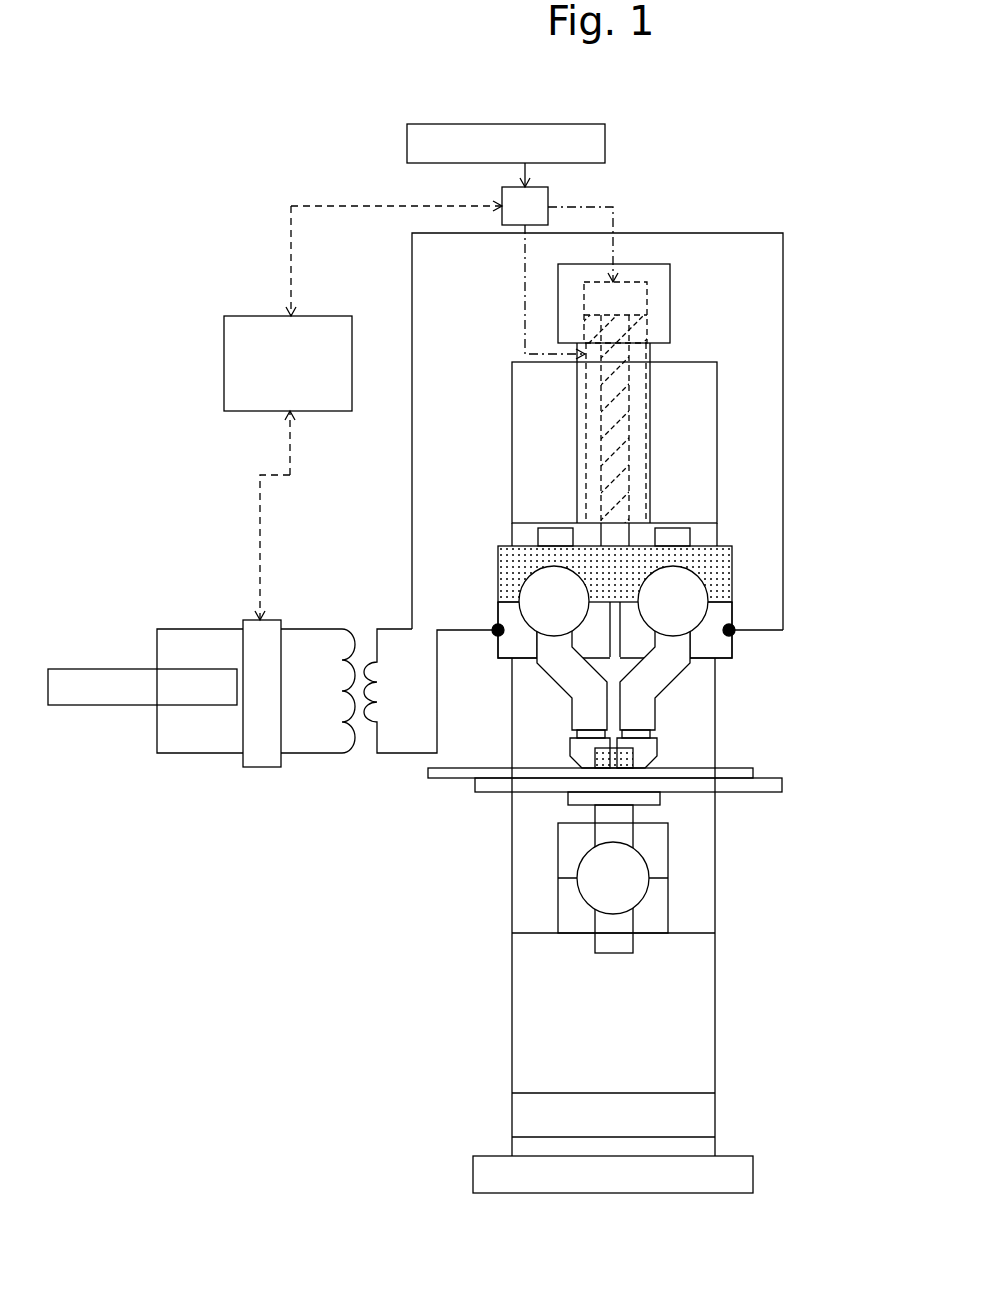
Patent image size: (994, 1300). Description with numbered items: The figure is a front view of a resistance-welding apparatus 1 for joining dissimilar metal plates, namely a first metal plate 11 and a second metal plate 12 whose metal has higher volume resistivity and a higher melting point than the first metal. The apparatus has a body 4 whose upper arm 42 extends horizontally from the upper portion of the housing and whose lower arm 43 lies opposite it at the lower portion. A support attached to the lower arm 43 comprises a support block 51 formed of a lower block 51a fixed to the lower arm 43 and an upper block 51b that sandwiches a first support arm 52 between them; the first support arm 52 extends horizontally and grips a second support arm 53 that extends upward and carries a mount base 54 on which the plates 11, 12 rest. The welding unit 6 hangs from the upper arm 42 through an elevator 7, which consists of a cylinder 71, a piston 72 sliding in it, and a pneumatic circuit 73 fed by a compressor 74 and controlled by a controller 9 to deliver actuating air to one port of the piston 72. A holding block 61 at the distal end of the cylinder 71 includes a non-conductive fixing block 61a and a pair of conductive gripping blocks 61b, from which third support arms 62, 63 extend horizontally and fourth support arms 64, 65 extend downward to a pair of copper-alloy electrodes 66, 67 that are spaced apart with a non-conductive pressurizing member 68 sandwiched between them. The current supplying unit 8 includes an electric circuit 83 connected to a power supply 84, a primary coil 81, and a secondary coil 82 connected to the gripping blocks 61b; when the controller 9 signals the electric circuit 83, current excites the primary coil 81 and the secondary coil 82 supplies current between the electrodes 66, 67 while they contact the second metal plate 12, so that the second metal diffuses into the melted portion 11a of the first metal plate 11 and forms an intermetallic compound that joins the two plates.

The resistance-welding apparatus 1 is at (759, 136).
The body 4 is at (589, 768).
The welding unit 6 is at (671, 623).
The elevator 7 is at (656, 288).
The current supplying unit 8 is at (415, 682).
The controller 9 is at (234, 377).
The first metal plate 11 is at (654, 808).
The melted portion 11a is at (663, 780).
The second metal plate 12 is at (747, 775).
The upper arm 42 is at (552, 430).
The lower arm 43 is at (533, 878).
The support block 51 is at (701, 878).
The lower block 51a is at (728, 904).
The upper block 51b is at (664, 840).
The first support arm 52 is at (603, 883).
The second support arm 53 is at (608, 927).
The mount base 54 is at (568, 797).
The holding block 61 is at (651, 566).
The fixing block 61a is at (720, 557).
The gripping block 61b is at (530, 637).
The third support arm 62 is at (542, 590).
The third support arm 63 is at (700, 597).
The fourth support arm 64 is at (585, 700).
The fourth support arm 65 is at (665, 685).
The electrode 66 is at (578, 758).
The electrode 67 is at (645, 763).
The pressurizing member 68 is at (657, 732).
The cylinder 71 is at (663, 310).
The piston 72 is at (637, 398).
The pneumatic circuit 73 is at (533, 200).
The compressor 74 is at (606, 147).
The primary coil 81 is at (332, 628).
The secondary coil 82 is at (383, 627).
The electric circuit 83 is at (262, 750).
The power supply 84 is at (140, 707).